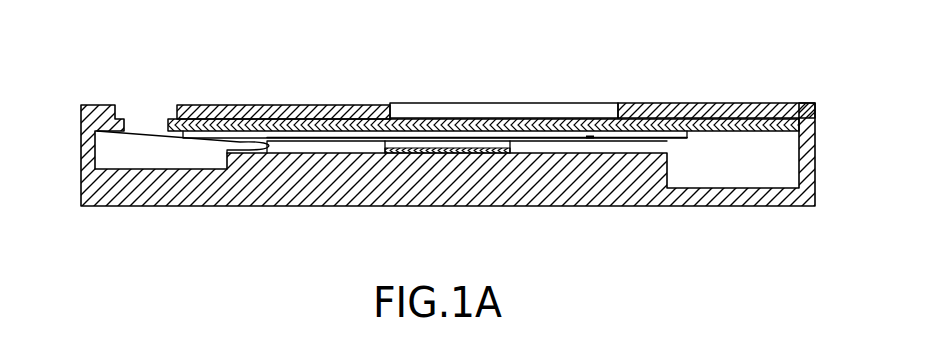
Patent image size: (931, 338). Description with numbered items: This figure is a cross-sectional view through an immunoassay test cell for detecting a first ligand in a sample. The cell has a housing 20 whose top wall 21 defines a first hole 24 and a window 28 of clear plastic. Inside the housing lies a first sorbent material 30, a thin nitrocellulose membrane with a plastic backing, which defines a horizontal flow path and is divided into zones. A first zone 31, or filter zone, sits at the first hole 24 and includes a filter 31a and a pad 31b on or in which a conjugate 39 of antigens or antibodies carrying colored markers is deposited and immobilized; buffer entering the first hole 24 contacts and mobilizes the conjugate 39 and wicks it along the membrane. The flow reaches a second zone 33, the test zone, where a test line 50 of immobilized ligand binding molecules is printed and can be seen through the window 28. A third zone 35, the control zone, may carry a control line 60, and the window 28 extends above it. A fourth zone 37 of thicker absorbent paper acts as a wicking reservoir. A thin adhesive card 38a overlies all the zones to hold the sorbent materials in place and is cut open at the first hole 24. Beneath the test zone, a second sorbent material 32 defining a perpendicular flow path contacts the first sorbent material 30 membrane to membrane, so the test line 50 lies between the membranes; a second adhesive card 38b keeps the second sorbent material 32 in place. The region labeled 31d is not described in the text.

The housing 20 is at (594, 198).
The top wall 21 is at (749, 111).
The first hole 24 is at (175, 112).
The window 28 is at (524, 112).
The first sorbent material 30 is at (312, 131).
The first zone 31 is at (465, 107).
The filter 31a is at (152, 145).
The pad 31b is at (236, 142).
The right cavity 31d is at (778, 157).
The second sorbent material 32 is at (390, 149).
The second zone 33 is at (431, 94).
The third zone 35 is at (575, 94).
The fourth zone 37 is at (699, 94).
The card 38a is at (109, 106).
The card 38b is at (452, 151).
The conjugate 39 is at (259, 134).
The test line 50 is at (445, 137).
The control line 60 is at (592, 136).